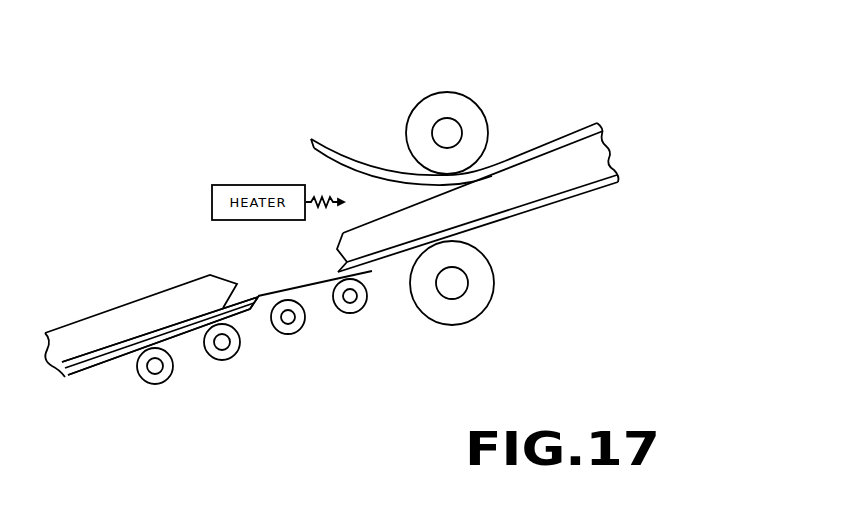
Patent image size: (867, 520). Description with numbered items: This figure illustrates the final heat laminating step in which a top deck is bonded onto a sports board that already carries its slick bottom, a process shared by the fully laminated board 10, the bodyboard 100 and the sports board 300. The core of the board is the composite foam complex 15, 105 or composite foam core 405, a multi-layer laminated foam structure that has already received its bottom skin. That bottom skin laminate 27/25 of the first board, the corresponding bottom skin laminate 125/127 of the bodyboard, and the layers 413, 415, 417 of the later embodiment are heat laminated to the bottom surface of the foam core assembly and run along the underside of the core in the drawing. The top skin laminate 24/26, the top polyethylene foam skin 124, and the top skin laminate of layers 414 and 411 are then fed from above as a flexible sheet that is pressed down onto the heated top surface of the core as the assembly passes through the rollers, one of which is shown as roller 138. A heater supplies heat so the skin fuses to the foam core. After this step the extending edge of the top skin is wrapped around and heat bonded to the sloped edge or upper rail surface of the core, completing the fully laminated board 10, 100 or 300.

The sports board 10 is at (532, 188).
The bodyboard 100 is at (532, 188).
The sports board 300 is at (624, 151).
The composite foam complex 15 is at (151, 272).
The composite foam complex 105 is at (151, 272).
The composite foam core 405 is at (123, 313).
The top skin laminate 24 is at (357, 122).
The top skin laminate 26 is at (357, 122).
The top polyethylene foam skin 124 is at (357, 122).
The top skin laminate layer 411 is at (357, 122).
The top skin laminate layer 414 is at (342, 153).
The bottom skin laminate 25 is at (334, 346).
The bottom skin laminate 125 is at (334, 346).
The bottom skin laminate layer 413 is at (298, 288).
The bottom skin laminate 27 is at (196, 374).
The bottom skin laminate 127 is at (196, 374).
The bottom skin laminate layer 415 is at (196, 374).
The bottom skin laminate layer 417 is at (242, 312).
The pressure roller 138 is at (472, 108).